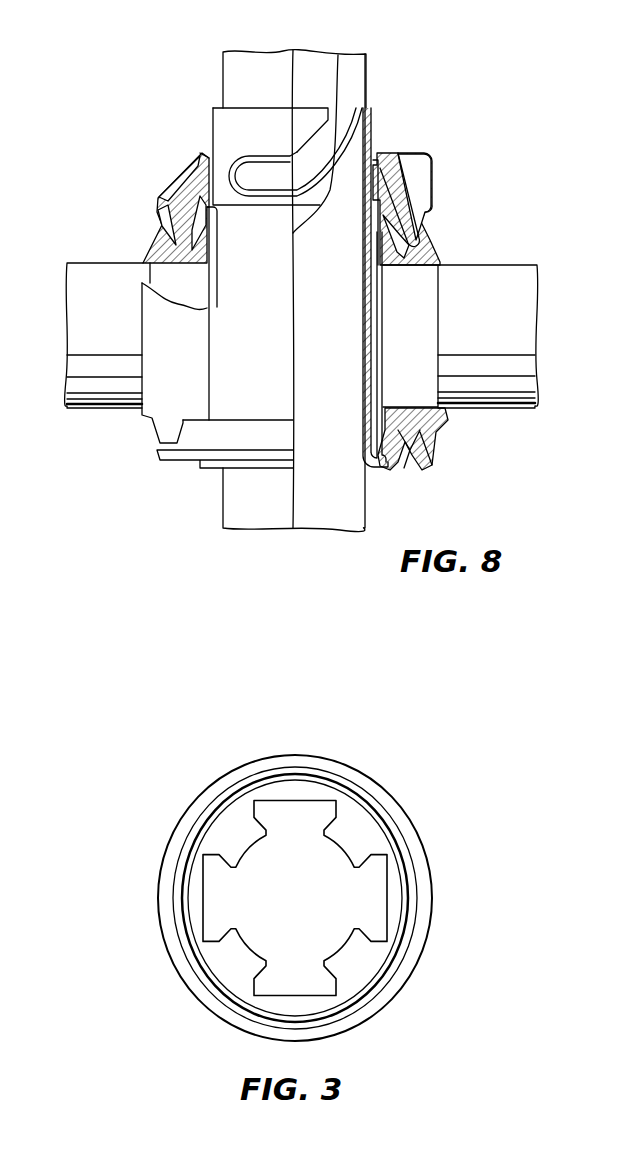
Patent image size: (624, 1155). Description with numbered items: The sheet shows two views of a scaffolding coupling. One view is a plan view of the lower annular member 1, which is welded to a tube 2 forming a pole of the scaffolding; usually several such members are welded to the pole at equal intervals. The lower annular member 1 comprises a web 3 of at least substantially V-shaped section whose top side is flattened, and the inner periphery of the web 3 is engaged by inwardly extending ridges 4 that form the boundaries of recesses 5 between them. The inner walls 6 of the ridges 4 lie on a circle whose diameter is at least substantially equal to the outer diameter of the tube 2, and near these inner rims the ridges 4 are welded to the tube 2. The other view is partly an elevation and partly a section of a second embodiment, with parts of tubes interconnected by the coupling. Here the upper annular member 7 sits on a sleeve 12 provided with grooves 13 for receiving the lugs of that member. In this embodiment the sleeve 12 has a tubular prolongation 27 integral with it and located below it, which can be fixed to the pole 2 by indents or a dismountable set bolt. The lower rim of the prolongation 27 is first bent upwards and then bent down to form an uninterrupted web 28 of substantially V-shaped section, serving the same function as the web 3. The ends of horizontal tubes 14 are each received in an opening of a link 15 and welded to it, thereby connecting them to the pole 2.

In FIG. 3, the lower annular member 1 is at (193, 993).
In FIG. 8, the tube 2 is at (233, 498).
In FIG. 3, the web 3 is at (408, 925).
In FIG. 8, the ridges 4 is at (102, 387).
In FIG. 3, the ridges 4 is at (353, 958).
In FIG. 3, the recesses 5 is at (380, 875).
In FIG. 3, the inner walls 6 is at (345, 853).
In FIG. 8, the upper annular member 7 is at (207, 147).
In FIG. 8, the sleeve 12 is at (247, 118).
In FIG. 8, the grooves 13 is at (320, 152).
In FIG. 8, the horizontal tubes 14 is at (522, 322).
In FIG. 8, the link 15 is at (145, 252).
In FIG. 8, the tubular prolongation 27 is at (372, 321).
In FIG. 8, the web 28 is at (432, 436).